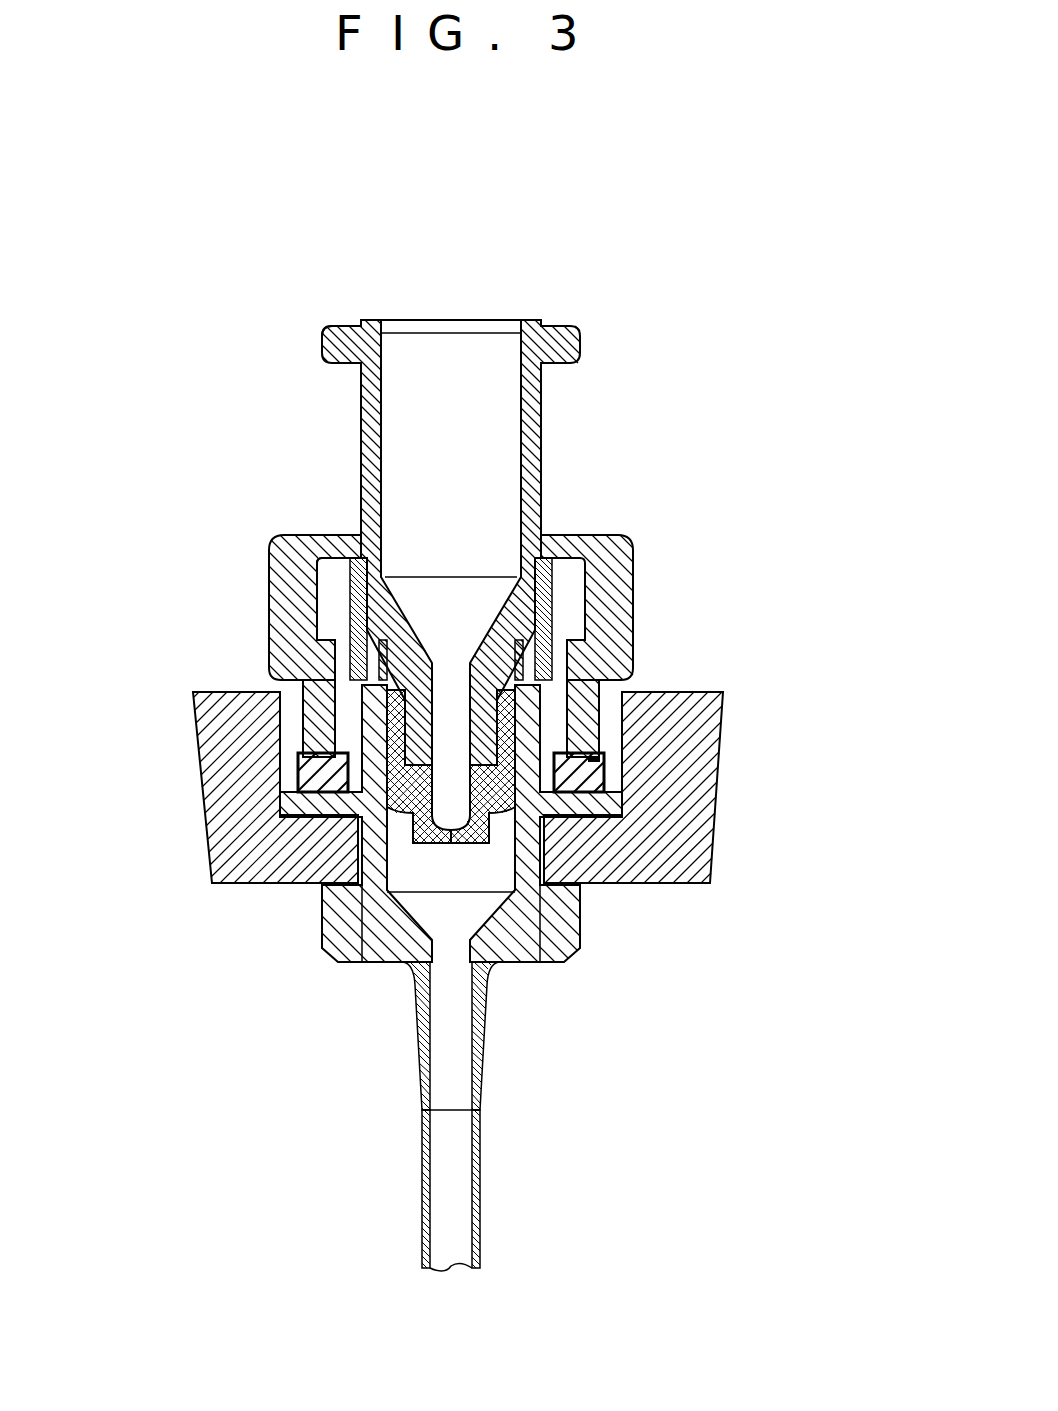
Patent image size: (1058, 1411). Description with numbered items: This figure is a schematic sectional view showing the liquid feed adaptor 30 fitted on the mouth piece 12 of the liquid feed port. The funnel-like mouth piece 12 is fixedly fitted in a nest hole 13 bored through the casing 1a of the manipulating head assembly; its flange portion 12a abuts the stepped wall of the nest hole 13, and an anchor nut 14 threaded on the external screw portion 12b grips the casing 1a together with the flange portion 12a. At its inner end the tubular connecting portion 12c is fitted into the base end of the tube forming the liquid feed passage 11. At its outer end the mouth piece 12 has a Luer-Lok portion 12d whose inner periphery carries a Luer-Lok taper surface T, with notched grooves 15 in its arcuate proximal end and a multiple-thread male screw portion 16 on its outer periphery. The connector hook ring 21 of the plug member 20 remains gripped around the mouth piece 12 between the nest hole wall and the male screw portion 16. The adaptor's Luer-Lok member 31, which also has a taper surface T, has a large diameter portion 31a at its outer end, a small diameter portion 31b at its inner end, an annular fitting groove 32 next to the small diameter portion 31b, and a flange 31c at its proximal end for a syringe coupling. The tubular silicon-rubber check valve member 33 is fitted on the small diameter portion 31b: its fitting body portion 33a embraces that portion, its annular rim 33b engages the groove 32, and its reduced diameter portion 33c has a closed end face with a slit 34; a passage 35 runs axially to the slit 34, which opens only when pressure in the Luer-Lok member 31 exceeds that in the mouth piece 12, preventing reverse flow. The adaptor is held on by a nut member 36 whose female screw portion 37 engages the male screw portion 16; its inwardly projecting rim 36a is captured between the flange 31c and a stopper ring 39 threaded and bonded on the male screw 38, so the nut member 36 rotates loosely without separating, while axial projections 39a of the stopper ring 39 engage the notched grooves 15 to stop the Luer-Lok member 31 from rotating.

The liquid feed adaptor 30 is at (592, 325).
The Luer-Lok member 31 is at (541, 395).
The large diameter portion 31a is at (361, 400).
The small diameter portion 31b is at (379, 663).
The flange 31c is at (322, 340).
The nut member 36 is at (290, 590).
The inwardly projecting rim 36a is at (352, 545).
The female screw portion 37 is at (330, 690).
The male screw 38 is at (330, 545).
The stopper ring 39 is at (548, 560).
The axial projections 39a is at (553, 668).
The notched grooves 15 is at (525, 670).
The male screw portion 16 is at (335, 717).
The annular fitting groove 32 is at (345, 715).
The connector hook ring 21 is at (300, 775).
The plug member 20 is at (604, 773).
The casing 1a is at (727, 710).
The mouth piece 12 is at (497, 963).
The flange portion 12a is at (605, 805).
The external screw portion 12b is at (350, 922).
The tubular connecting portion 12c is at (418, 1057).
The Luer-Lok portion 12d is at (540, 733).
The nest hole 13 is at (577, 887).
The anchor nut 14 is at (333, 953).
The check valve member 33 is at (365, 845).
The fitting body portion 33a is at (411, 821).
The annular rim 33b is at (500, 697).
The reduced diameter portion 33c is at (577, 943).
The slit 34 is at (448, 845).
The passage 35 is at (545, 870).
The liquid feed passage 11 is at (478, 1233).
The Luer-Lok taper surface T is at (380, 372).